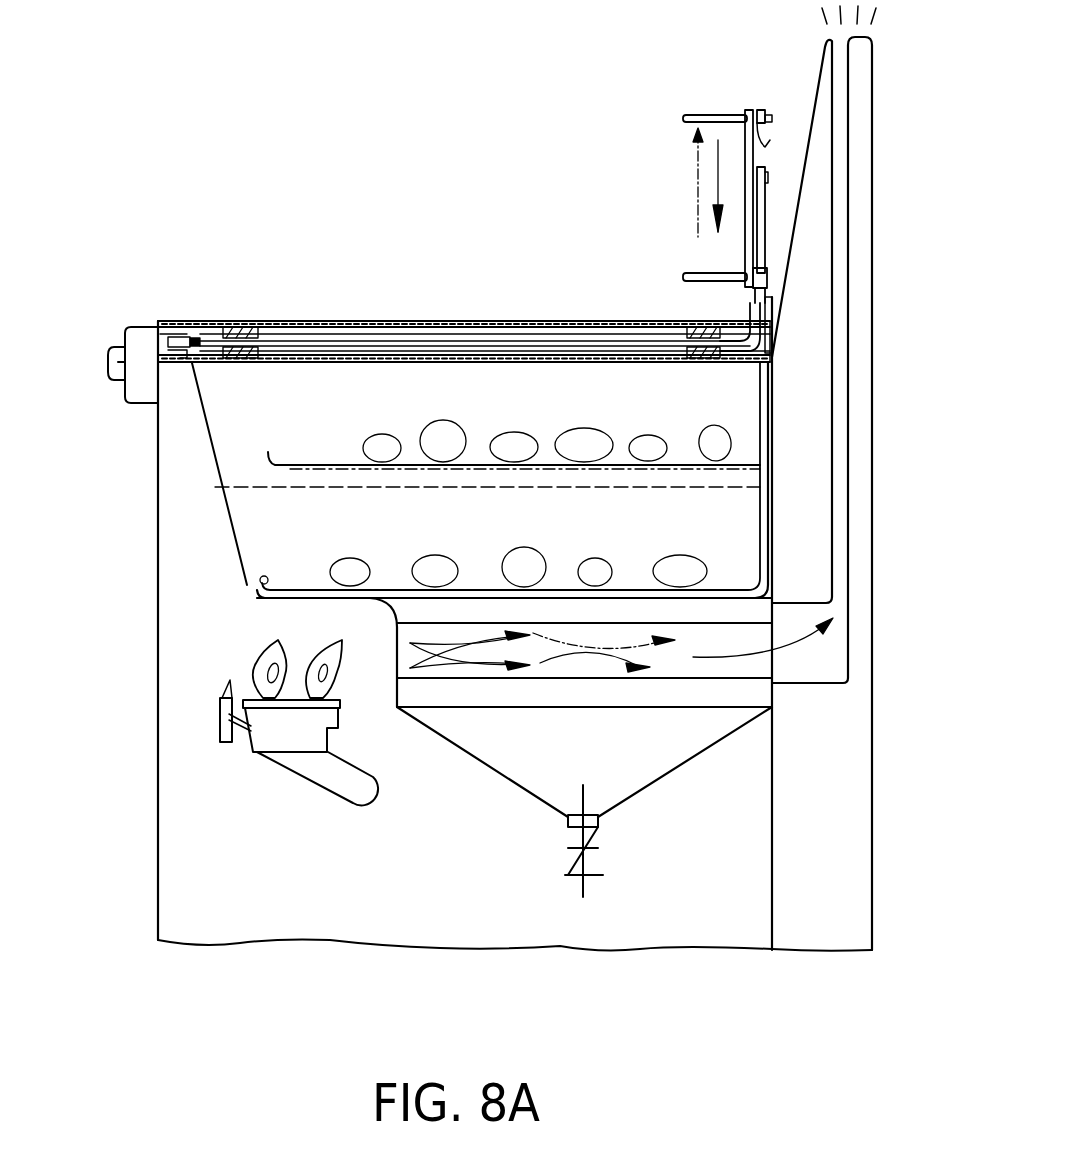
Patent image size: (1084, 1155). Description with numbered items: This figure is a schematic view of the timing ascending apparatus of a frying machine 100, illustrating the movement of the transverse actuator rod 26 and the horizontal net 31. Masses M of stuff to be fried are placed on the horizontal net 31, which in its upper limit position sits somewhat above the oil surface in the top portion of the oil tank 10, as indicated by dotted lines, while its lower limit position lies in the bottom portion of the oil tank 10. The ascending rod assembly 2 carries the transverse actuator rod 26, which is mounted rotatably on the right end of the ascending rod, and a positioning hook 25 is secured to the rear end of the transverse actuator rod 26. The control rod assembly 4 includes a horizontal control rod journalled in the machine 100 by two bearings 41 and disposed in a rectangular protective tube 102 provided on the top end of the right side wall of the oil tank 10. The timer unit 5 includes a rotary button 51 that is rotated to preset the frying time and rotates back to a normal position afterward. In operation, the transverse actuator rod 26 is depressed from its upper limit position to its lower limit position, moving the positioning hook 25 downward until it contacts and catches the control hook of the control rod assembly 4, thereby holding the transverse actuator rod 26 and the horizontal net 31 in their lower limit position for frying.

The ascending rod assembly 2 is at (733, 191).
The control rod assembly 4 is at (464, 317).
The timer unit 5 is at (162, 300).
The oil tank 10 is at (208, 452).
The positioning hook 25 is at (773, 137).
The transverse actuator rod 26 is at (690, 107).
The horizontal net 31 is at (290, 453).
The bearings 41 is at (245, 325).
The rotary button 51 is at (112, 367).
The machine 100 is at (941, 229).
The rectangular protective tube 102 is at (405, 322).
The masses of stuff M is at (501, 432).